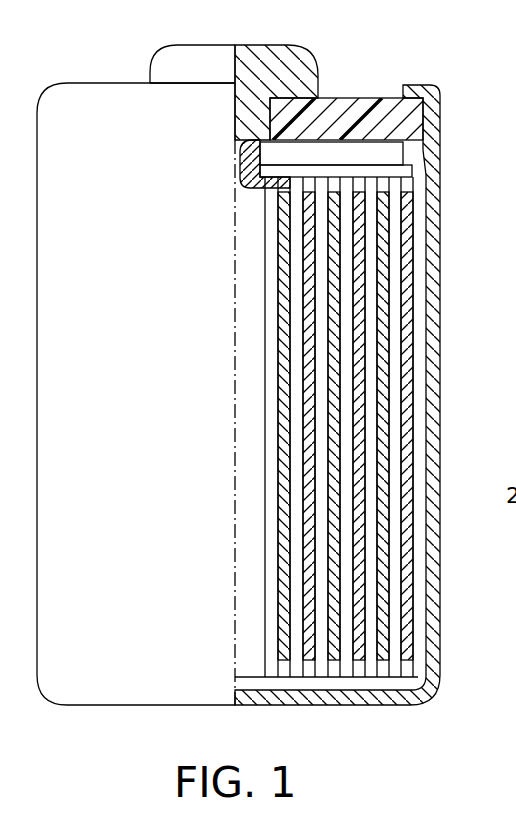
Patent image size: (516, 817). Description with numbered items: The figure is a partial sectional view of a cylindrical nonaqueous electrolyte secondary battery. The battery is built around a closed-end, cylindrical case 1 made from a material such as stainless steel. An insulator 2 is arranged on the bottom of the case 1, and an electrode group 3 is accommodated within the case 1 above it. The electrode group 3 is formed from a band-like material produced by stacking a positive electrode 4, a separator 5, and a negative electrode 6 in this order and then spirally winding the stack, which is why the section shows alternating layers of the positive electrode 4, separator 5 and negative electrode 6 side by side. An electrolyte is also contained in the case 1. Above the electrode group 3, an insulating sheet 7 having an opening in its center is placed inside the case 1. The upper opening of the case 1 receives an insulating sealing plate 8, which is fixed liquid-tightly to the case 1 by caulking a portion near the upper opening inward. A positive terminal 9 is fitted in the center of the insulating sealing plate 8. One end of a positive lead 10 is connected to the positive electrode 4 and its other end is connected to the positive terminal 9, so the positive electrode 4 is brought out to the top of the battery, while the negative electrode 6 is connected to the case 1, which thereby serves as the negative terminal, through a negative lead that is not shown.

The case 1 is at (435, 599).
The insulator 2 is at (373, 682).
The electrode group 3 is at (388, 427).
The positive electrode 4 is at (380, 263).
The separator 5 is at (393, 300).
The negative electrode 6 is at (477, 247).
The insulating sheet 7 is at (423, 157).
The insulating sealing plate 8 is at (357, 100).
The positive terminal 9 is at (273, 50).
The positive lead 10 is at (250, 173).